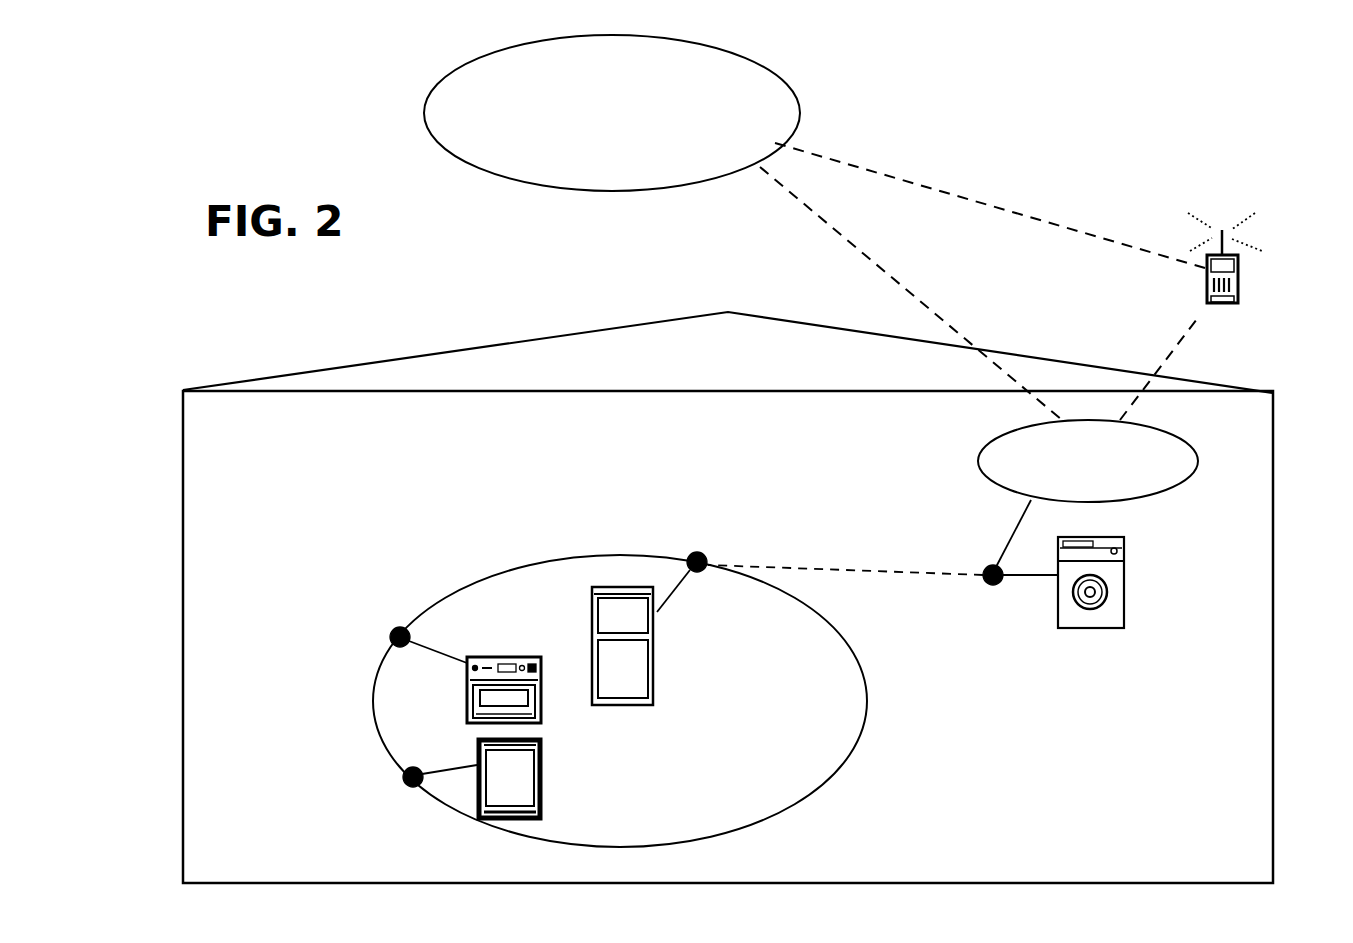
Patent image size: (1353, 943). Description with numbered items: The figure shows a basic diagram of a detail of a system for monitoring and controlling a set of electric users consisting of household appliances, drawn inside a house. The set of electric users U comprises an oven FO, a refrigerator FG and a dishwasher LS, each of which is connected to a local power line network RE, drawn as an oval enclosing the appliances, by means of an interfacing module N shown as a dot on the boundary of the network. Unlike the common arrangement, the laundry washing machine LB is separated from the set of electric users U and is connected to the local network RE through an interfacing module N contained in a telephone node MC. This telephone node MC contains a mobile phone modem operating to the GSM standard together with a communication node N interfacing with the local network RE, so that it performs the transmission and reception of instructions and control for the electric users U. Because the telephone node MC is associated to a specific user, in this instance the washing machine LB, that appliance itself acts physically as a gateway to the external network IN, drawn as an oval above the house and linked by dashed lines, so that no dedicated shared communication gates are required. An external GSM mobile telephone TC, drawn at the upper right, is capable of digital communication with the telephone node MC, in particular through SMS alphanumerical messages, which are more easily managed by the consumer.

The external network IN is at (612, 113).
The external GSM mobile telephone TC is at (1239, 260).
The telephone node MC is at (1088, 461).
The interfacing module N is at (683, 665).
The laundry washing machine LB is at (1091, 606).
The local power line network RE is at (845, 788).
The set of electric users U is at (335, 742).
The oven FO is at (504, 672).
The refrigerator FG is at (650, 646).
The dishwasher LS is at (536, 779).